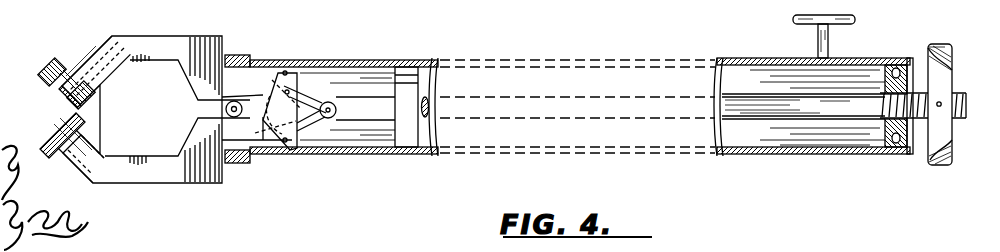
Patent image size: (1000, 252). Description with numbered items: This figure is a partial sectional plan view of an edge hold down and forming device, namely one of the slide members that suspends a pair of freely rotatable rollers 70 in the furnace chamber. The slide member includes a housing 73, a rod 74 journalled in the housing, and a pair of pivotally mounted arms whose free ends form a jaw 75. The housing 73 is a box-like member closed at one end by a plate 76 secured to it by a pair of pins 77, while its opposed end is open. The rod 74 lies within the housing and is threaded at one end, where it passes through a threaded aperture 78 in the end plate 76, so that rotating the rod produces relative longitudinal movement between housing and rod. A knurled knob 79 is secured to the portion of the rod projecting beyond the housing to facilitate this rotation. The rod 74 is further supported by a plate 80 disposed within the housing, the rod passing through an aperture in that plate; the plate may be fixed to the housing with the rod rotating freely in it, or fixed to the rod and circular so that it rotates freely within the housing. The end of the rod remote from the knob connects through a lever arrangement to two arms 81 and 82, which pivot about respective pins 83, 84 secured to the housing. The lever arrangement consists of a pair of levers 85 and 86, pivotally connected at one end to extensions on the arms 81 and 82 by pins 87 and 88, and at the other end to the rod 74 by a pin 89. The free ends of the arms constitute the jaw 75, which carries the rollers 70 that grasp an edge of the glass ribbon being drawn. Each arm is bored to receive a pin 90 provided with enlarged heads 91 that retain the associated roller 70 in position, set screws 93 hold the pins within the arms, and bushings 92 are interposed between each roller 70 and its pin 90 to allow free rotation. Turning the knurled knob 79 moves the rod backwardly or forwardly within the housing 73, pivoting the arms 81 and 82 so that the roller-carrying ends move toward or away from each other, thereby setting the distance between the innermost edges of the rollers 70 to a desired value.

The roller 70 is at (47, 63).
The bushing 92 is at (63, 65).
The enlarged head 91 is at (57, 93).
The pin 90 is at (83, 72).
The arm 81 is at (167, 55).
The arm 82 is at (165, 162).
The jaw 75 is at (157, 187).
The set screw 93 is at (235, 100).
The pin 83 is at (285, 73).
The pin 88 is at (285, 91).
The lever 86 is at (305, 98).
The pin 89 is at (329, 101).
The pin 87 is at (263, 129).
The lever 85 is at (305, 123).
The pin 84 is at (300, 151).
The plate 80 is at (407, 75).
The rod 74 is at (762, 118).
The housing 73 is at (803, 150).
The pin 77 is at (895, 63).
The plate 76 is at (912, 60).
The knurled knob 79 is at (946, 72).
The threaded aperture 78 is at (910, 83).